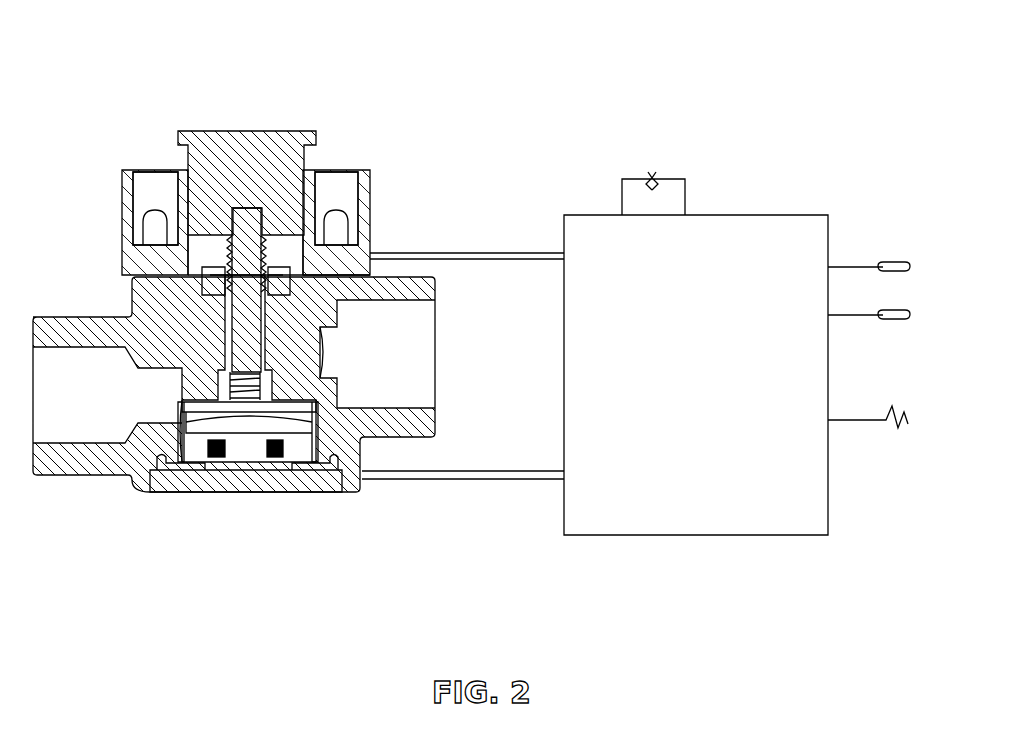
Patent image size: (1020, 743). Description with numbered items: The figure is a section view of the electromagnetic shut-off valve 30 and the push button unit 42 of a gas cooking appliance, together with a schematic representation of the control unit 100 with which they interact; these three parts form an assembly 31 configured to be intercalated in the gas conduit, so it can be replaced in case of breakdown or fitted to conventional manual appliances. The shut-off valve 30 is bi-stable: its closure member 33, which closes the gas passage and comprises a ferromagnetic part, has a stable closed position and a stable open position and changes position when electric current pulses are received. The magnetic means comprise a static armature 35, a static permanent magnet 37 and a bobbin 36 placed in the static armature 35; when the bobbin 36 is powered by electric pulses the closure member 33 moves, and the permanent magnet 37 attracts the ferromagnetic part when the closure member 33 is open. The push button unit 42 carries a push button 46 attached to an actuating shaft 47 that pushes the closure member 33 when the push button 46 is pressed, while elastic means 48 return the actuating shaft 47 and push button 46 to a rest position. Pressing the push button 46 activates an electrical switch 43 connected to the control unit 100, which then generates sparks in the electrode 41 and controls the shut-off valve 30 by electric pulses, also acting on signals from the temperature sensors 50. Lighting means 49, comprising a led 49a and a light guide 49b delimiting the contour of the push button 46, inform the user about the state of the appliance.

The shut-off valve 30 is at (84, 291).
The assembly 31 is at (598, 76).
The closure member 33 is at (266, 410).
The static armature 35 is at (243, 464).
The bobbin 36 is at (209, 458).
The static permanent magnet 37 is at (232, 428).
The electrode 41 is at (880, 395).
The push button unit 42 is at (264, 164).
The electrical switch 43 is at (310, 464).
The push button 46 is at (245, 128).
The actuating shaft 47 is at (231, 306).
The elastic means 48 is at (266, 263).
The lighting means 49 is at (264, 182).
The led 49a is at (145, 230).
The light guide 49b is at (337, 170).
The temperature sensor 50 is at (890, 310).
The control unit 100 is at (758, 214).